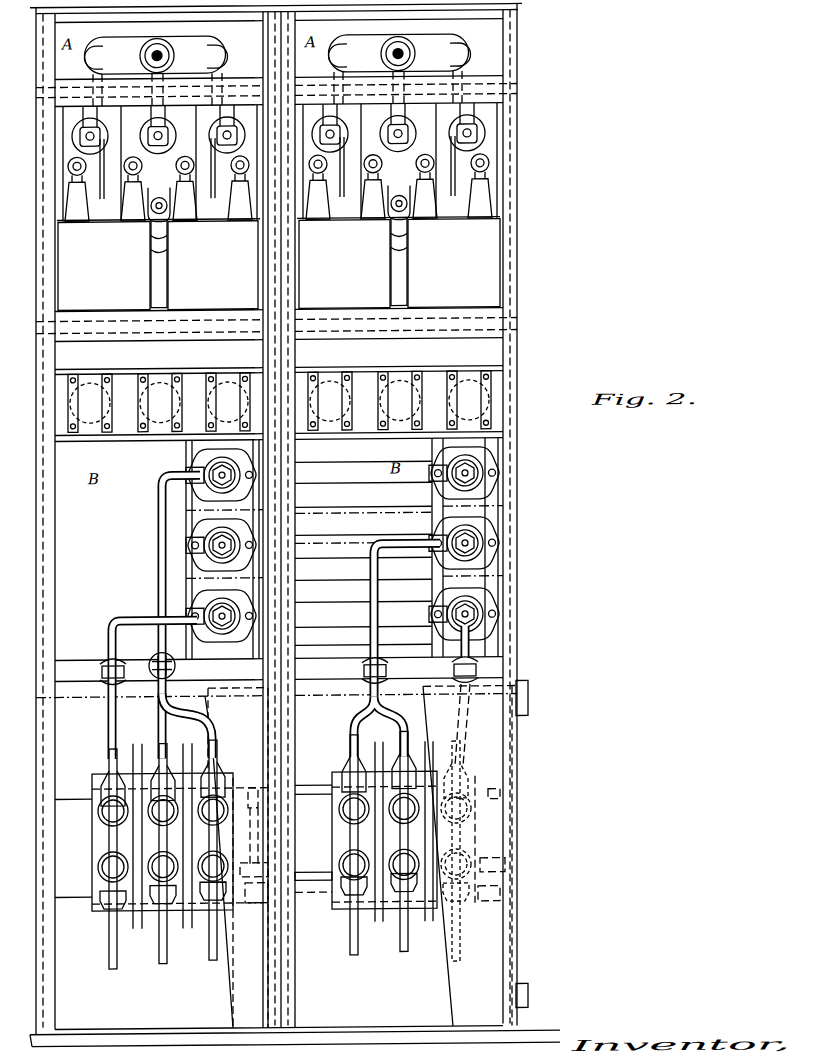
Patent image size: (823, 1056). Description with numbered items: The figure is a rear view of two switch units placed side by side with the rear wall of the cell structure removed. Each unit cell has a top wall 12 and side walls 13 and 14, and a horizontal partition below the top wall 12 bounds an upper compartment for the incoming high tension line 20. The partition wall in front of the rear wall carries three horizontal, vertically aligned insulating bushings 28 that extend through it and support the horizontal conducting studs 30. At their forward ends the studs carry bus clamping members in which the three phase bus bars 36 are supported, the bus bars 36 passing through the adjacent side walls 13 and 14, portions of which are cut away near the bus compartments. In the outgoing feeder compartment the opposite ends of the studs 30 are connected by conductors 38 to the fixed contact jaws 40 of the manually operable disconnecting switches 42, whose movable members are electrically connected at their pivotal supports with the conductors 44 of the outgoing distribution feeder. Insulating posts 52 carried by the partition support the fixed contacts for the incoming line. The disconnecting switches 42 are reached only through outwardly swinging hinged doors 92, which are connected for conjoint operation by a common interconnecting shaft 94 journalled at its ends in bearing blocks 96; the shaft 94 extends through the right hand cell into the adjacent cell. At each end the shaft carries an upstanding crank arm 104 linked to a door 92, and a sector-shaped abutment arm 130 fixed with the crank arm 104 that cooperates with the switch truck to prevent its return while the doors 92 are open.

The top wall 12 is at (483, 8).
The side wall 13 is at (270, 280).
The side wall 14 is at (300, 262).
The incoming high tension line 20 is at (165, 60).
The insulating bushing 28 is at (206, 498).
The conducting stud 30 is at (196, 475).
The bus bar 36 is at (348, 480).
The conductor 38 is at (158, 552).
The fixed contact jaw 40 is at (112, 812).
The disconnecting switch 42 is at (160, 851).
The conductor of the outgoing distribution feeder 44 is at (208, 954).
The insulating post 52 is at (128, 395).
The hinged door 92 is at (548, 740).
The interconnecting shaft 94 is at (329, 884).
The bearing block 96 is at (266, 905).
The crank arm 104 is at (258, 815).
The abutment arm 130 is at (255, 907).